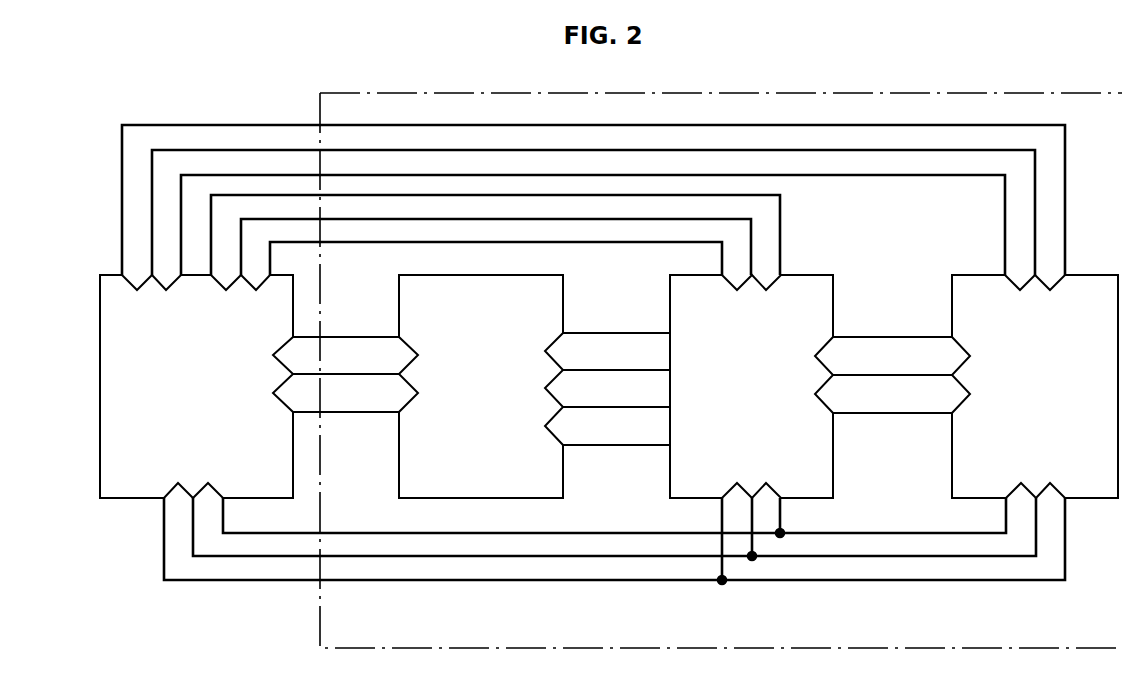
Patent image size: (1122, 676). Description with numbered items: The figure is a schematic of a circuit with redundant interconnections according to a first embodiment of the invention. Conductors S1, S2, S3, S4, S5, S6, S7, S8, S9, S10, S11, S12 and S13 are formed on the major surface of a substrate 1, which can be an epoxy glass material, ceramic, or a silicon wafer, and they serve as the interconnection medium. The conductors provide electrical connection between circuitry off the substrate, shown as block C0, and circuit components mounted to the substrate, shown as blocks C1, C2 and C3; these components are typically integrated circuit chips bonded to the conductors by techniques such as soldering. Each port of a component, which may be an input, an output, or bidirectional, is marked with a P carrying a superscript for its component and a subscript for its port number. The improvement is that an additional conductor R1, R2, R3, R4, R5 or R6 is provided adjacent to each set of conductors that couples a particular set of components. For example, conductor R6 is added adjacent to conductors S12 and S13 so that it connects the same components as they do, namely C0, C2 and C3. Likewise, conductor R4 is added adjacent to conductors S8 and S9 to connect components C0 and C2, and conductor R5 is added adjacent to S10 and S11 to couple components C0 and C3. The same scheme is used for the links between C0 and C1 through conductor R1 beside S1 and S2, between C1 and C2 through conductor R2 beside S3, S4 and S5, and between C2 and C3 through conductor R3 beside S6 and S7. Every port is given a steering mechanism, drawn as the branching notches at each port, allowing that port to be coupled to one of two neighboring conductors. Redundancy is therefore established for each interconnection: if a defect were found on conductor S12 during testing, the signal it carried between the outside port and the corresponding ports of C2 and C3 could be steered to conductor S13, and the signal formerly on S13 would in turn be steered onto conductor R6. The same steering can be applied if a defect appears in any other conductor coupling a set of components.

The substrate 1 is at (408, 111).
The off-substrate circuitry block C0 is at (196, 386).
The circuit component C1 is at (481, 386).
The circuit component C2 is at (751, 386).
The circuit component C3 is at (1035, 386).
The additional conductor R1 is at (330, 413).
The additional conductor R2 is at (642, 445).
The additional conductor R3 is at (870, 413).
The additional conductor R4 is at (270, 258).
The additional conductor R5 is at (195, 174).
The additional conductor R6 is at (579, 581).
The conductor S1 is at (340, 337).
The conductor S2 is at (355, 374).
The conductor S3 is at (583, 333).
The conductor S4 is at (609, 370).
The conductor S5 is at (636, 407).
The conductor S6 is at (850, 337).
The conductor S7 is at (898, 375).
The conductor S8 is at (250, 195).
The conductor S9 is at (302, 219).
The conductor S10 is at (122, 240).
The conductor S11 is at (152, 187).
The conductor S12 is at (557, 533).
The conductor S13 is at (688, 556).